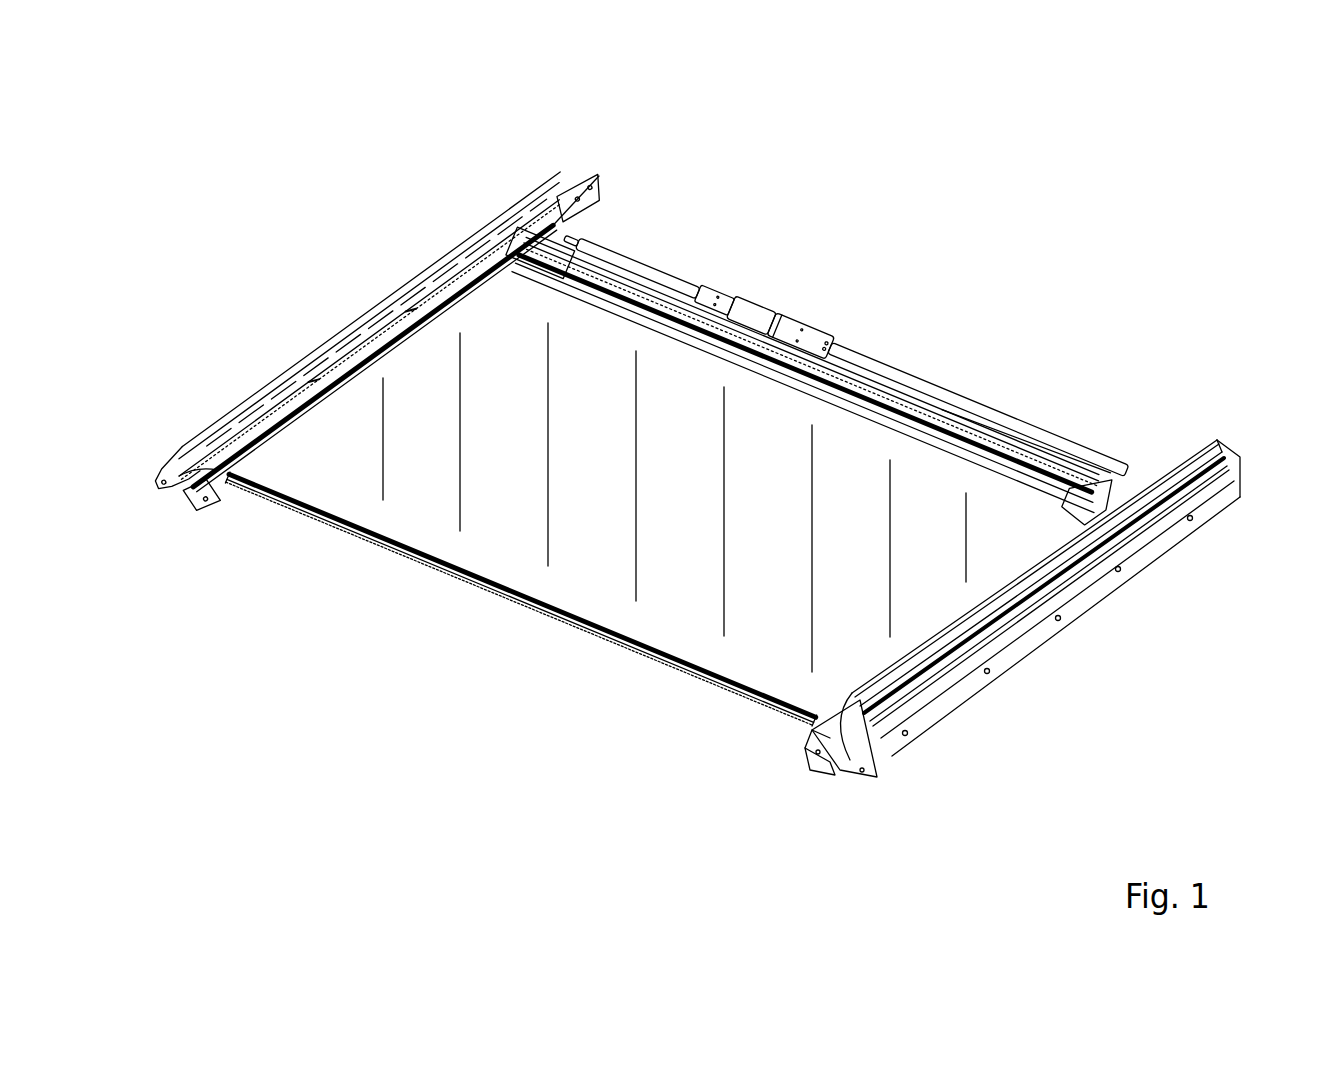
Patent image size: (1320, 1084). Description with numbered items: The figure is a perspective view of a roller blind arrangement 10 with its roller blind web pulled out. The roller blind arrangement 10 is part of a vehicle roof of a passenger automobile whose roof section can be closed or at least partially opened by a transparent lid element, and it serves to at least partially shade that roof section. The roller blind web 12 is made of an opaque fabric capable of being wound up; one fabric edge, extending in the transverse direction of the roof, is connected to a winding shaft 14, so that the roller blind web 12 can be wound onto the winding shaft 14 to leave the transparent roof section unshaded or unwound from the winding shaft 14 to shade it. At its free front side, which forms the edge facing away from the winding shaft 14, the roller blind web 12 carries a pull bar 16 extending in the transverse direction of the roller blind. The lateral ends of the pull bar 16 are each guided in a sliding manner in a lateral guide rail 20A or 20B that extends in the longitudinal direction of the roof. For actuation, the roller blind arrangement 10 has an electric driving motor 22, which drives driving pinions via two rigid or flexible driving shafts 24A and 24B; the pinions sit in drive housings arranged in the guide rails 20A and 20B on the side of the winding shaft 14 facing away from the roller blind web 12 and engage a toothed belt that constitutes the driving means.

The roller blind arrangement 10 is at (693, 420).
The roller blind web 12 is at (667, 617).
The winding shaft 14 is at (1023, 438).
The pull bar 16 is at (468, 578).
The lateral guide rail 20A is at (988, 635).
The lateral guide rail 20B is at (405, 297).
The electric driving motor 22 is at (773, 313).
The driving shaft 24A is at (1000, 415).
The driving shaft 24B is at (628, 257).